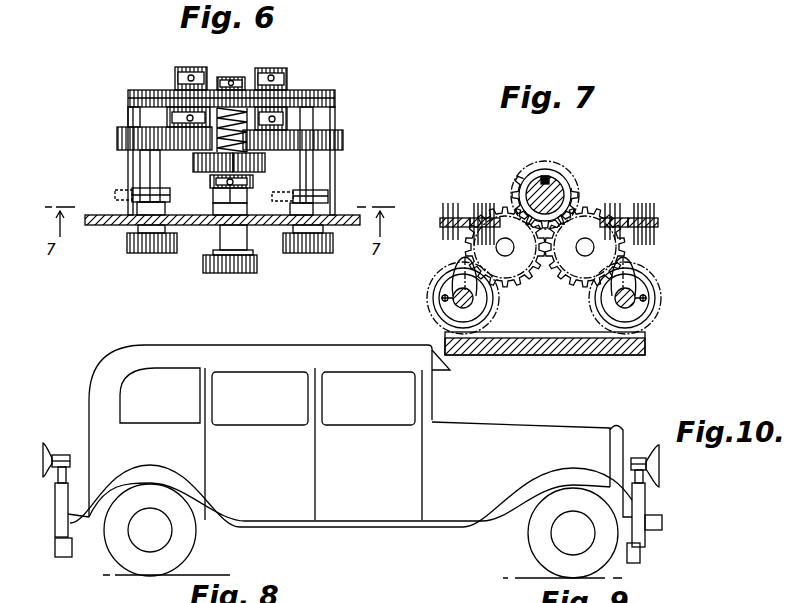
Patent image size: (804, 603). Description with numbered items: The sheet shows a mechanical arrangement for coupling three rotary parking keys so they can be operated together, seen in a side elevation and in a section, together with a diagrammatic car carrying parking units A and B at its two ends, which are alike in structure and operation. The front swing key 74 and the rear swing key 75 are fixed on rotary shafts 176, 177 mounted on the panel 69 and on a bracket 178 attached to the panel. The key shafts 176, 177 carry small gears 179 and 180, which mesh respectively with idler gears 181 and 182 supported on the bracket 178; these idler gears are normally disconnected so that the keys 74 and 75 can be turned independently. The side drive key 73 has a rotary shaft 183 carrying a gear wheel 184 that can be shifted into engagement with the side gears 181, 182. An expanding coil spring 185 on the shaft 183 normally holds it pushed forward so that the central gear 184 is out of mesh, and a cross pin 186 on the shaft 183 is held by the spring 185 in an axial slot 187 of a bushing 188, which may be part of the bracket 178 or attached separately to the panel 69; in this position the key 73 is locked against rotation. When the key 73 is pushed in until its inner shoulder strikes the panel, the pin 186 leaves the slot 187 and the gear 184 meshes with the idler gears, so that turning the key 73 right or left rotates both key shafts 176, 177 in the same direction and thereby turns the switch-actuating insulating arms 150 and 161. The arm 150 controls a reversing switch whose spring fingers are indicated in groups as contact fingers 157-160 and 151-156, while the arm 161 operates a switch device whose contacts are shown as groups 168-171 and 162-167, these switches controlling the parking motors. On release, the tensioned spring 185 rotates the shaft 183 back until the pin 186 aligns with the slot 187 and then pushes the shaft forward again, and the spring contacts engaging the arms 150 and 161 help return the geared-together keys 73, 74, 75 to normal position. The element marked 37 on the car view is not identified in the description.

In FIG. 6, the bracket 178 is at (131, 113).
In FIG. 7, the bracket 178 is at (545, 338).
In FIG. 6, the expanding coil spring 185 is at (216, 130).
In FIG. 6, the small gear 179 is at (117, 138).
In FIG. 7, the small gear 179 is at (489, 305).
In FIG. 6, the small gear 180 is at (343, 139).
In FIG. 7, the small gear 180 is at (591, 305).
In FIG. 6, the rotary shaft 176 is at (140, 166).
In FIG. 7, the rotary shaft 176 is at (457, 304).
In FIG. 6, the rotary shaft 177 is at (313, 161).
In FIG. 7, the rotary shaft 177 is at (636, 308).
In FIG. 6, the idler gear 181 is at (193, 161).
In FIG. 7, the idler gear 181 is at (506, 280).
In FIG. 6, the idler gear 182 is at (270, 160).
In FIG. 7, the idler gear 182 is at (575, 278).
In FIG. 6, the gear wheel 184 is at (210, 181).
In FIG. 7, the gear wheel 184 is at (518, 180).
In FIG. 6, the cross pin 186 is at (250, 183).
In FIG. 7, the cross pin 186 is at (548, 180).
In FIG. 6, the axial slot 187 is at (222, 201).
In FIG. 6, the insulating arm 150 is at (132, 194).
In FIG. 7, the insulating arm 150 is at (466, 266).
In FIG. 6, the insulating arm 161 is at (328, 194).
In FIG. 7, the insulating arm 161 is at (628, 269).
In FIG. 6, the panel 69 is at (103, 226).
In FIG. 6, the front swing key 74 is at (140, 253).
In FIG. 6, the side drive key 73 is at (220, 273).
In FIG. 6, the rear swing key 75 is at (310, 253).
In FIG. 6, the rotary shaft 183 is at (222, 236).
In FIG. 7, the rotary shaft 183 is at (563, 193).
In FIG. 6, the bushing 188 is at (248, 204).
In FIG. 7, the contact fingers 157-160 is at (460, 206).
In FIG. 7, the contact fingers 151-156 is at (496, 206).
In FIG. 7, the contacts 168-171 is at (616, 206).
In FIG. 7, the contacts 162-167 is at (660, 206).
In FIG. 10, the parking unit A is at (650, 503).
In FIG. 10, the parking unit B is at (55, 506).
In FIG. 10, the horn mounting bracket 37 is at (641, 563).